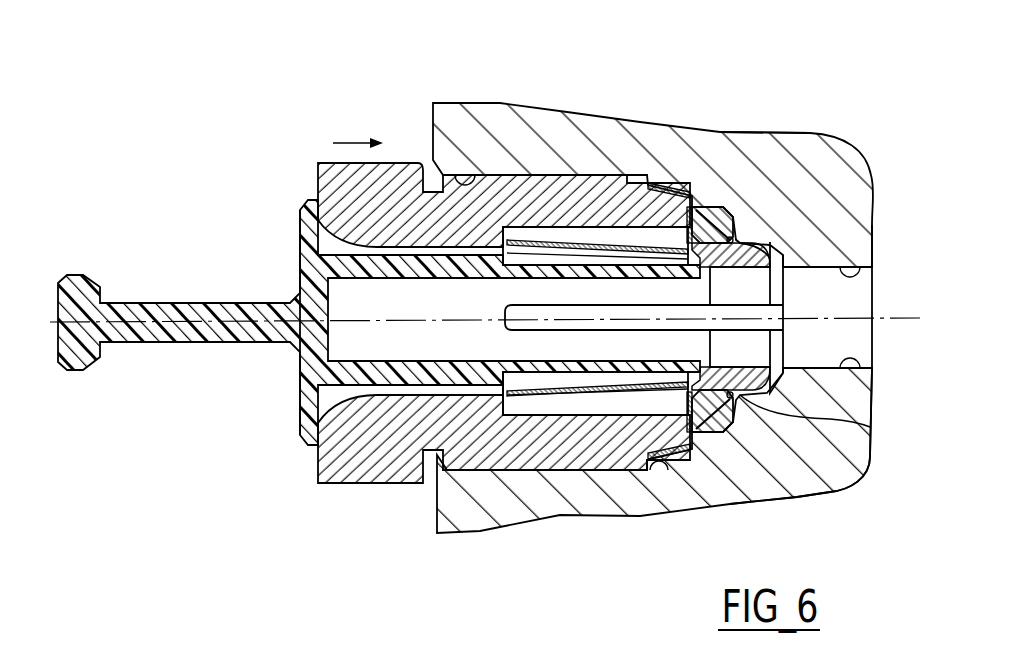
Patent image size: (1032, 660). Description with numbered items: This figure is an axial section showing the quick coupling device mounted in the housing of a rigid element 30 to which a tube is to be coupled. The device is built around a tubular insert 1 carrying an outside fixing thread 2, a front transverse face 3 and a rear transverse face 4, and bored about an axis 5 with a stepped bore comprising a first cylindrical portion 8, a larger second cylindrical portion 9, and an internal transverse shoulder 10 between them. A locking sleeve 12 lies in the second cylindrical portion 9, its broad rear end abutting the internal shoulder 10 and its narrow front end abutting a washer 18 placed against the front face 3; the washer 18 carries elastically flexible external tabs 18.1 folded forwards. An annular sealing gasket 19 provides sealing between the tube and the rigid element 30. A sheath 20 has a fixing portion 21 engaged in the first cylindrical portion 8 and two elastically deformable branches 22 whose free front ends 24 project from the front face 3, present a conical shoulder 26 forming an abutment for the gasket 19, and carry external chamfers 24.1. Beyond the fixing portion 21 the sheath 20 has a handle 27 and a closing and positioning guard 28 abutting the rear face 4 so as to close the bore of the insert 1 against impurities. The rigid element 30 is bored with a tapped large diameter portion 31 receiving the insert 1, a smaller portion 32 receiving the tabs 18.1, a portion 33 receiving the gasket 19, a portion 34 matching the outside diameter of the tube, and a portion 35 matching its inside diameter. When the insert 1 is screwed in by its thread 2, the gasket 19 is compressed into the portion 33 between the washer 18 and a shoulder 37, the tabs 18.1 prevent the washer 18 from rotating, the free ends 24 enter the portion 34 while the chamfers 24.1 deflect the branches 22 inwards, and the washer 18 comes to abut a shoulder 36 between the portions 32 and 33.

The tubular insert 1 is at (362, 500).
The outside fixing thread 2 is at (556, 175).
The front transverse face 3 is at (692, 440).
The rear transverse face 4 is at (317, 183).
The axis 5 is at (886, 324).
The first cylindrical portion 8 is at (415, 388).
The second cylindrical portion 9 is at (542, 470).
The internal transverse shoulder 10 is at (520, 415).
The sleeve 12 is at (570, 410).
The washer 18 is at (716, 434).
The external tabs 18.1 is at (680, 185).
The annular sealing gasket 19 is at (740, 232).
The sheath 20 is at (288, 393).
The fixing portion 21 is at (441, 268).
The elastically deformable branches 22 is at (558, 396).
The free front ends 24 is at (770, 366).
The external chamfers 24.1 is at (873, 427).
The conical shoulder 26 is at (767, 247).
The handle 27 is at (197, 332).
The closing and positioning guard 28 is at (306, 420).
The rigid element 30 is at (742, 150).
The large diameter portion 31 is at (477, 173).
The portion 32 is at (625, 412).
The portion 33 is at (730, 207).
The portion 34 is at (783, 258).
The portion 35 is at (850, 262).
The shoulder 36 is at (662, 472).
The shoulder 37 is at (765, 445).